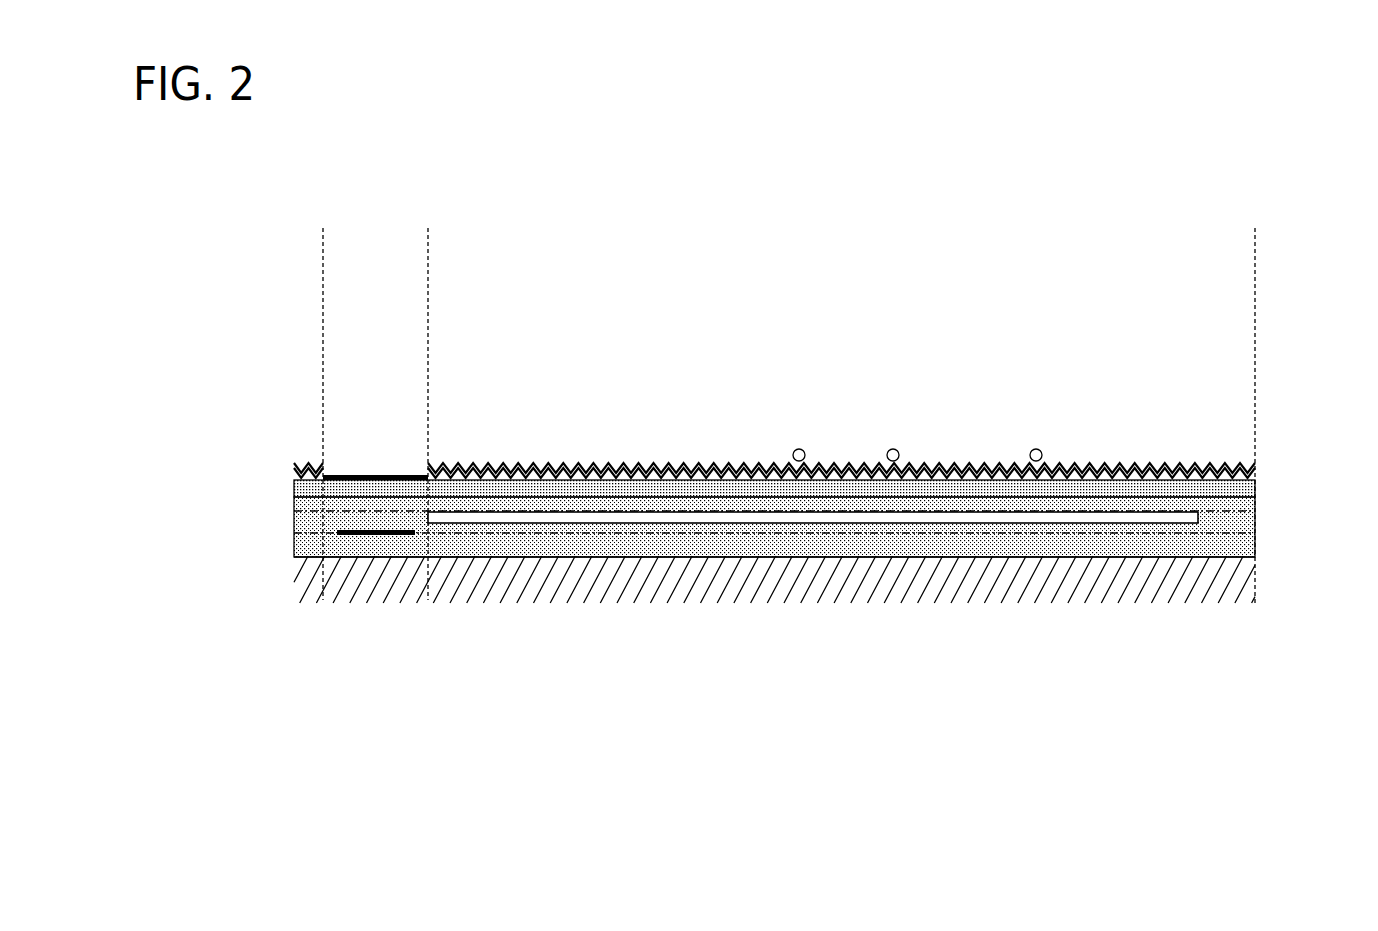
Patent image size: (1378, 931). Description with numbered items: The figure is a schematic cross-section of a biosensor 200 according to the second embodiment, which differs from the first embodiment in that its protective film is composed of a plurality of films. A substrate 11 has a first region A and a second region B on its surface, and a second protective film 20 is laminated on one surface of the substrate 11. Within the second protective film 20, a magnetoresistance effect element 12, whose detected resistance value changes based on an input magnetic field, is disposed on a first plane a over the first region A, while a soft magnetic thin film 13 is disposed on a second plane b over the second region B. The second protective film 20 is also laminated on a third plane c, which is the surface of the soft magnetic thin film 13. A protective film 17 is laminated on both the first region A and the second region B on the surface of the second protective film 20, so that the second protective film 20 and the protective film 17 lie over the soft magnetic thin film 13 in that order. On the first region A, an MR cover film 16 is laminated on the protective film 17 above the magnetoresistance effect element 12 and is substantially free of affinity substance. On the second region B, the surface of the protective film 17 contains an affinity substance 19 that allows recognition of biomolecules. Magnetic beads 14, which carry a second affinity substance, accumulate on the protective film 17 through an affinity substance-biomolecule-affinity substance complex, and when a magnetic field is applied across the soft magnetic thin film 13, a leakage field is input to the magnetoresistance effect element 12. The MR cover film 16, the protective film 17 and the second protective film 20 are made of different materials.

The biosensor 200 is at (297, 263).
The substrate 11 is at (764, 597).
The magnetoresistance effect element 12 is at (372, 537).
The soft magnetic thin film 13 is at (822, 527).
The magnetic beads 14 is at (1036, 449).
The MR cover film 16 is at (372, 475).
The protective film 17 is at (1258, 491).
The affinity substance 19 is at (1193, 467).
The second protective film 20 is at (291, 497).
The first plane a is at (1268, 529).
The second plane b is at (1268, 519).
The third plane c is at (1268, 502).
The first region A is at (426, 246).
The second region B is at (1253, 246).